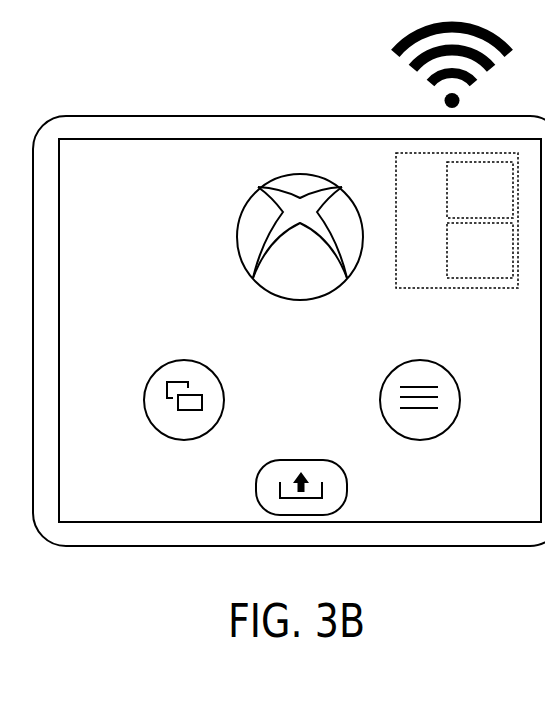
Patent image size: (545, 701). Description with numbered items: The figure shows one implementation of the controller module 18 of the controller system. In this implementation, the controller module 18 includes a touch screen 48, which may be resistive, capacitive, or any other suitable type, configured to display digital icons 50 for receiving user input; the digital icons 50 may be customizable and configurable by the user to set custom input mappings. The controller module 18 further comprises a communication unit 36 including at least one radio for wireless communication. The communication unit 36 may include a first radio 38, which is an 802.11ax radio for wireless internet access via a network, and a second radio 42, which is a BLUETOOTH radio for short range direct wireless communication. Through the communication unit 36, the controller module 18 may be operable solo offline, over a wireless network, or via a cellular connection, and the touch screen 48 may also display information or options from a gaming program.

The controller module 18 is at (92, 116).
The touch screen 48 is at (92, 171).
The digital icons 50 is at (250, 203).
The communication unit 36 is at (426, 183).
The first radio 38 is at (491, 201).
The second radio 42 is at (491, 262).